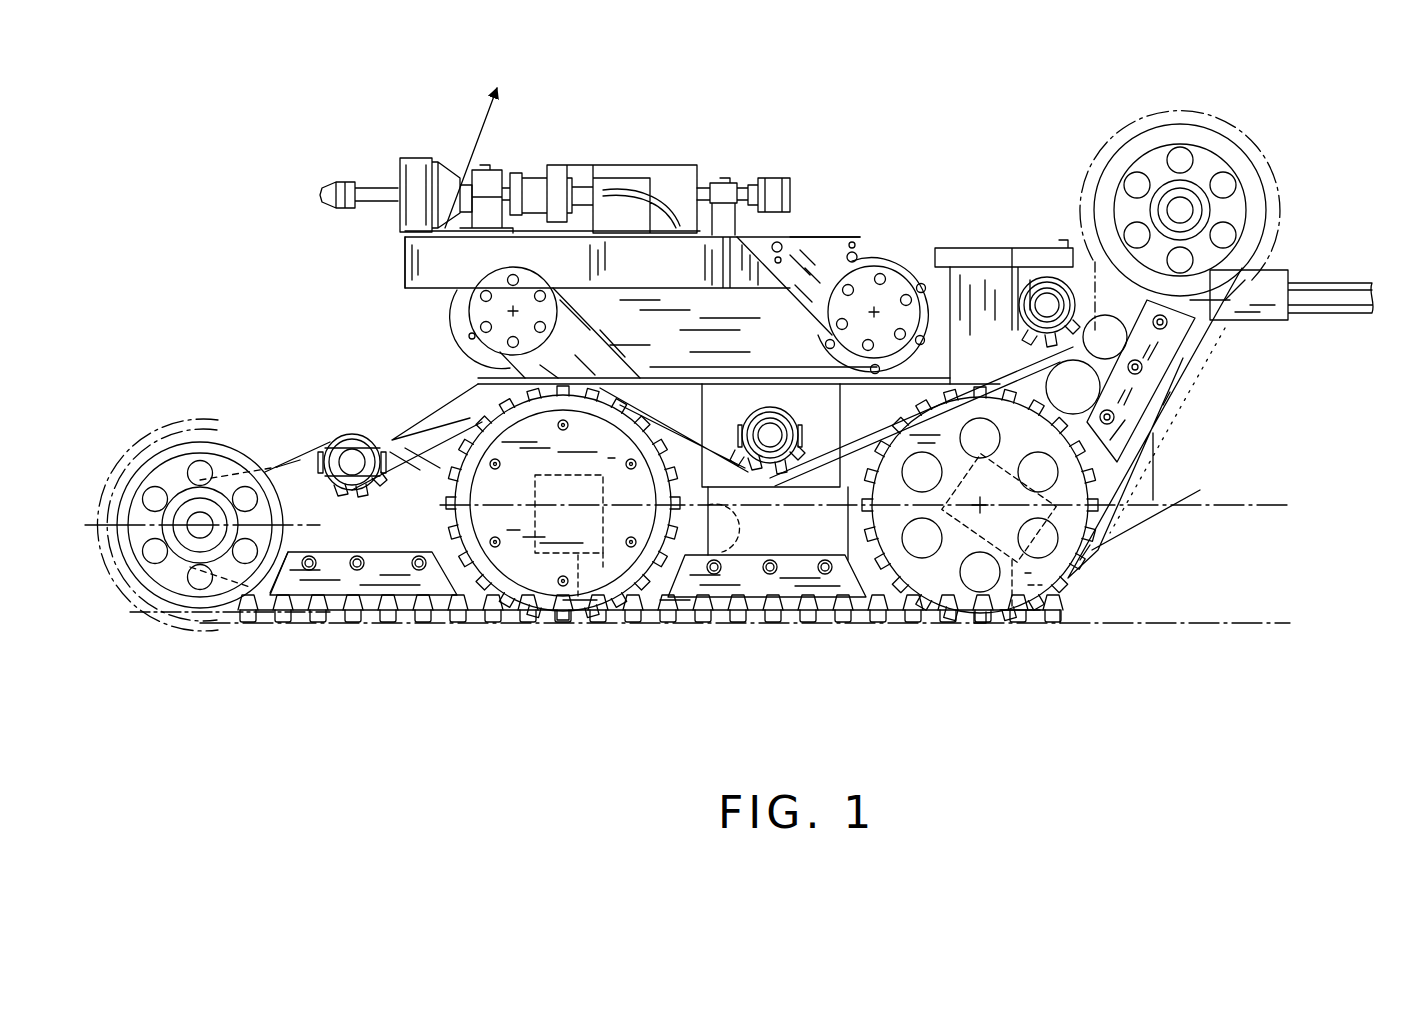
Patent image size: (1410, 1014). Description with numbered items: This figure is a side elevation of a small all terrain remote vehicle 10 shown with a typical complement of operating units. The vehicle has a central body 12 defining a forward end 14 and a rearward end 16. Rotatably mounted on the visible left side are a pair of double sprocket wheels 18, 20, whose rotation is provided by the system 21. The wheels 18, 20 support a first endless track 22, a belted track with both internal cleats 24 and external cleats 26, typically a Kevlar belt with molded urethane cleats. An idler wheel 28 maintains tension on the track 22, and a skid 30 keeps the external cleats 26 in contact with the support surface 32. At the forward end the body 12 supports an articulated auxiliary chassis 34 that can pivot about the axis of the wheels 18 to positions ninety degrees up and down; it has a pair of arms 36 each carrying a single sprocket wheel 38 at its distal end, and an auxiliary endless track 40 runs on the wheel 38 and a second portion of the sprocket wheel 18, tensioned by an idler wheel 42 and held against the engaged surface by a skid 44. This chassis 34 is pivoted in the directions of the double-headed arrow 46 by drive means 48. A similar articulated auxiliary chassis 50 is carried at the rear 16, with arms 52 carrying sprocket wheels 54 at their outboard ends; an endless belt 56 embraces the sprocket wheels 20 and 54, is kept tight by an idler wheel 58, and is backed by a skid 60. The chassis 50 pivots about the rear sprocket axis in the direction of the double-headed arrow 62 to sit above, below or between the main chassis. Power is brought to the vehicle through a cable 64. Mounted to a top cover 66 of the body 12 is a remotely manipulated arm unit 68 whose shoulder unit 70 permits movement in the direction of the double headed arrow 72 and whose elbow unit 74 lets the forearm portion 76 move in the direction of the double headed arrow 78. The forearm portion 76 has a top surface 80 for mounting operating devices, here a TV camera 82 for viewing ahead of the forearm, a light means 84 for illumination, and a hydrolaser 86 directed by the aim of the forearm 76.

The all terrain remote vehicle 10 is at (918, 100).
The central body 12 is at (1098, 560).
The forward end 14 is at (450, 414).
The rearward end 16 is at (1113, 543).
The sprocket wheel 18 is at (512, 592).
The sprocket wheel 20 is at (1040, 598).
The system for rotation of the wheels 21 is at (1015, 630).
The first endless track 22 is at (828, 622).
The internal cleats 24 is at (660, 600).
The external cleats 26 is at (905, 624).
The idler wheel 28 is at (800, 465).
The skid 30 is at (687, 590).
The support surface 32 is at (1125, 632).
The articulated auxiliary chassis 34 is at (262, 597).
The arm 36 is at (272, 462).
The sprocket wheel 38 is at (220, 594).
The auxiliary endless track 40 is at (272, 612).
The idler wheel 42 is at (345, 432).
The skid 44 is at (412, 612).
The double-headed arrow 46 is at (215, 330).
The drive means 48 is at (575, 587).
The articulated auxiliary chassis 50 is at (1192, 300).
The arm 52 is at (1132, 330).
The sprocket wheel 54 is at (1262, 143).
The endless belt 56 is at (1232, 123).
The idler wheel 58 is at (1040, 278).
The skid 60 is at (1157, 397).
The double-headed arrow 62 is at (1345, 445).
The cable 64 is at (1322, 282).
The top cover 66 is at (482, 376).
The remotely manipulated arm unit 68 is at (432, 292).
The shoulder unit 70 is at (468, 331).
The double headed arrow 72 is at (872, 193).
The elbow unit 74 is at (888, 258).
The forearm portion 76 is at (403, 258).
The double headed arrow 78 is at (470, 110).
The top surface 80 is at (818, 237).
The TV camera 82 is at (580, 160).
The light means 84 is at (415, 152).
The hydrolaser 86 is at (345, 180).